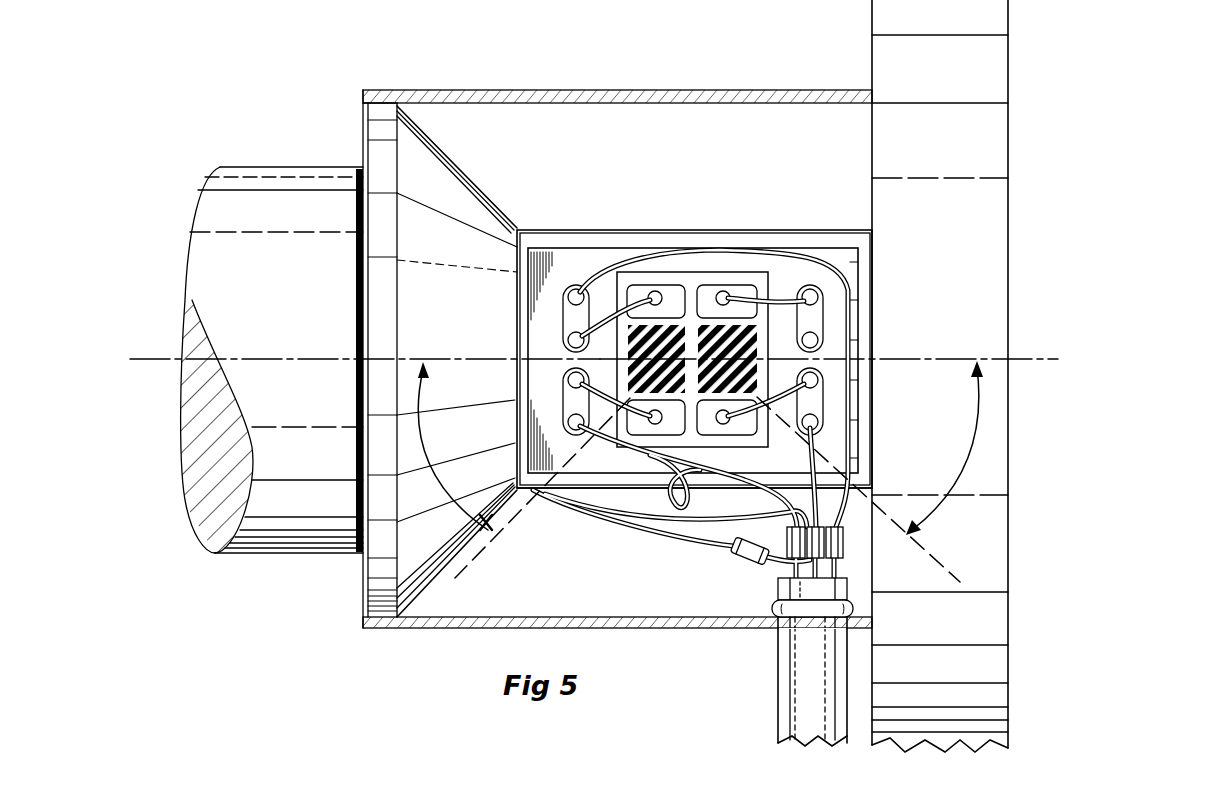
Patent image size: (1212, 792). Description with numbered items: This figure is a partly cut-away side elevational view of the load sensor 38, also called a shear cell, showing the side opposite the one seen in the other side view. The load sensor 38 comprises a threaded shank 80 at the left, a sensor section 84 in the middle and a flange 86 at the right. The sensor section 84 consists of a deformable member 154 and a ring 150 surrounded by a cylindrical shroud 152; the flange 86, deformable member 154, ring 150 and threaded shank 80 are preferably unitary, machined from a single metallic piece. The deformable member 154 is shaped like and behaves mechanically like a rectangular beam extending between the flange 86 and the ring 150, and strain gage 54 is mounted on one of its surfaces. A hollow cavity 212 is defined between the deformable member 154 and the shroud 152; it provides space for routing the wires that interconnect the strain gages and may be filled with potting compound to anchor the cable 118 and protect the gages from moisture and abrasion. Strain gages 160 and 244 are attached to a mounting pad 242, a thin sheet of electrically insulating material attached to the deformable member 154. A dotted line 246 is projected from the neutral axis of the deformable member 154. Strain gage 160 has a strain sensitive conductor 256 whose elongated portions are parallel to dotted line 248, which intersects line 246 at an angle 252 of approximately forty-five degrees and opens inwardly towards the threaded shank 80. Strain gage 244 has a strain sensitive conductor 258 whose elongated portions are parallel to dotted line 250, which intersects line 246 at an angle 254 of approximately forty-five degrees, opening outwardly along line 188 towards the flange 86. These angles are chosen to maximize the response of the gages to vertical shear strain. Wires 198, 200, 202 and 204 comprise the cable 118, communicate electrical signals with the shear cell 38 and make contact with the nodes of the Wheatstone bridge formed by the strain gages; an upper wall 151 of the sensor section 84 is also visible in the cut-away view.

The load sensor 38 is at (426, 70).
The sensor section 84 is at (352, 120).
The threaded shank 80 is at (237, 167).
The upper funnel wall 151 is at (450, 162).
The ring 150 is at (365, 599).
The cylindrical shroud 152 is at (418, 630).
The deformable member 154 is at (535, 229).
The strain gage 160 is at (655, 290).
The strain gage 54 is at (699, 262).
The strain gage 244 is at (730, 282).
The mounting pad 242 is at (773, 280).
The dotted line 246 is at (158, 358).
The line 188 is at (1035, 358).
The flange 86 is at (1008, 62).
The hollow cavity 212 is at (624, 577).
The strain sensitive conductor 256 is at (628, 376).
The strain sensitive conductor 258 is at (758, 378).
The wire 200 is at (738, 560).
The wire 204 is at (792, 545).
The wire 202 is at (812, 567).
The wire 198 is at (835, 548).
The cable 118 is at (790, 722).
The angle 252 is at (449, 446).
The angle 254 is at (944, 448).
The dotted line 248 is at (488, 555).
The dotted line 250 is at (869, 489).